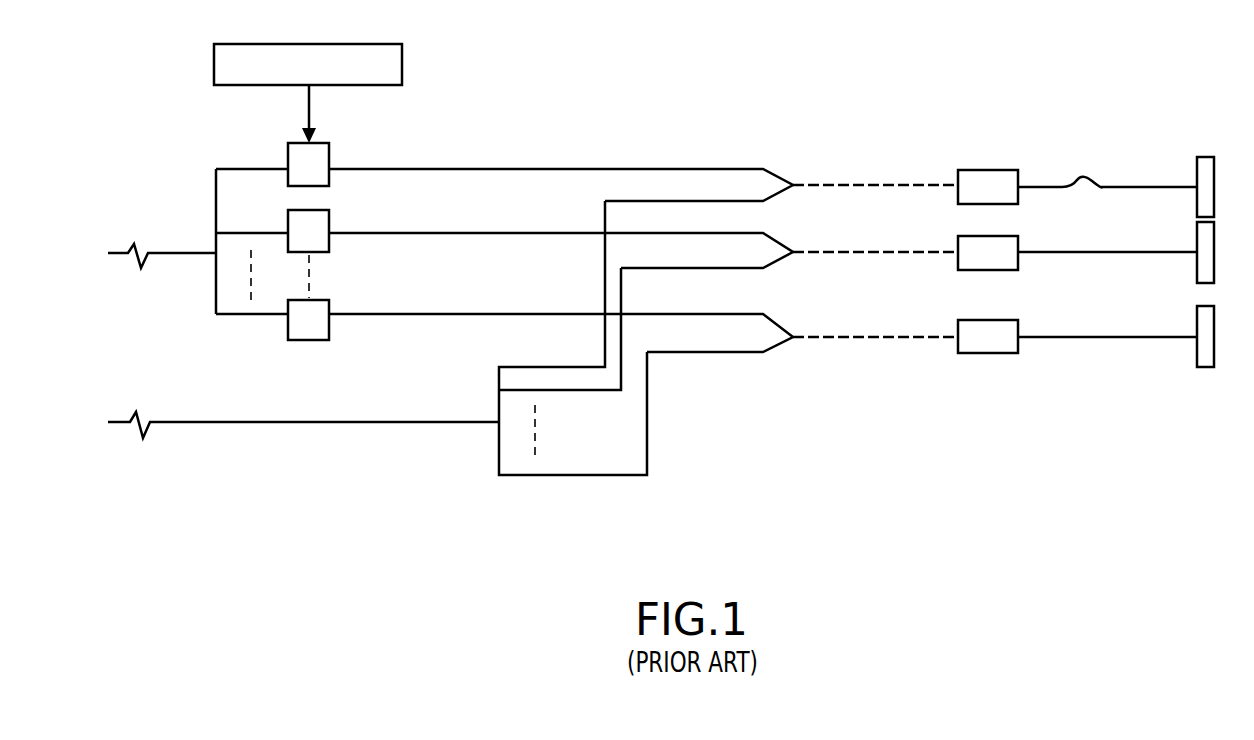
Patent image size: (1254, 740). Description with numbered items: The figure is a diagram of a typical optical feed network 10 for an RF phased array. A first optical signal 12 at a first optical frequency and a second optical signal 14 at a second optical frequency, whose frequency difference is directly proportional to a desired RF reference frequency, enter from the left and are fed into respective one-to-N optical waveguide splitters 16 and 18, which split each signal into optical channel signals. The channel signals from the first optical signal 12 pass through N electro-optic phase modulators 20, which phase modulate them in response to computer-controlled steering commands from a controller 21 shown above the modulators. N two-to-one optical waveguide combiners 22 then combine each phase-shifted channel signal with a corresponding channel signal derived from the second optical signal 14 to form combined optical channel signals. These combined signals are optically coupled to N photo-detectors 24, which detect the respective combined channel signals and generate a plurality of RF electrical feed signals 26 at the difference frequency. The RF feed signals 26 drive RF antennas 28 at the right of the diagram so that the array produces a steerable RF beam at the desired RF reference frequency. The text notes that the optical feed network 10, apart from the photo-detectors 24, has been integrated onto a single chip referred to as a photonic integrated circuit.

The optical feed network 10 is at (664, 69).
The first optical signal 12 is at (134, 246).
The second optical signal 14 is at (134, 416).
The 1-to-N optical waveguide splitter 16 is at (216, 167).
The 1-to-N optical waveguide splitter 18 is at (500, 369).
The electro-optic phase modulators 20 is at (330, 152).
The controller 21 is at (402, 64).
The 2-to-1 optical waveguide combiners 22 is at (750, 168).
The photo-detectors 24 is at (990, 170).
The RF electrical feed signals 26 is at (1085, 182).
The RF antennas 28 is at (1205, 157).